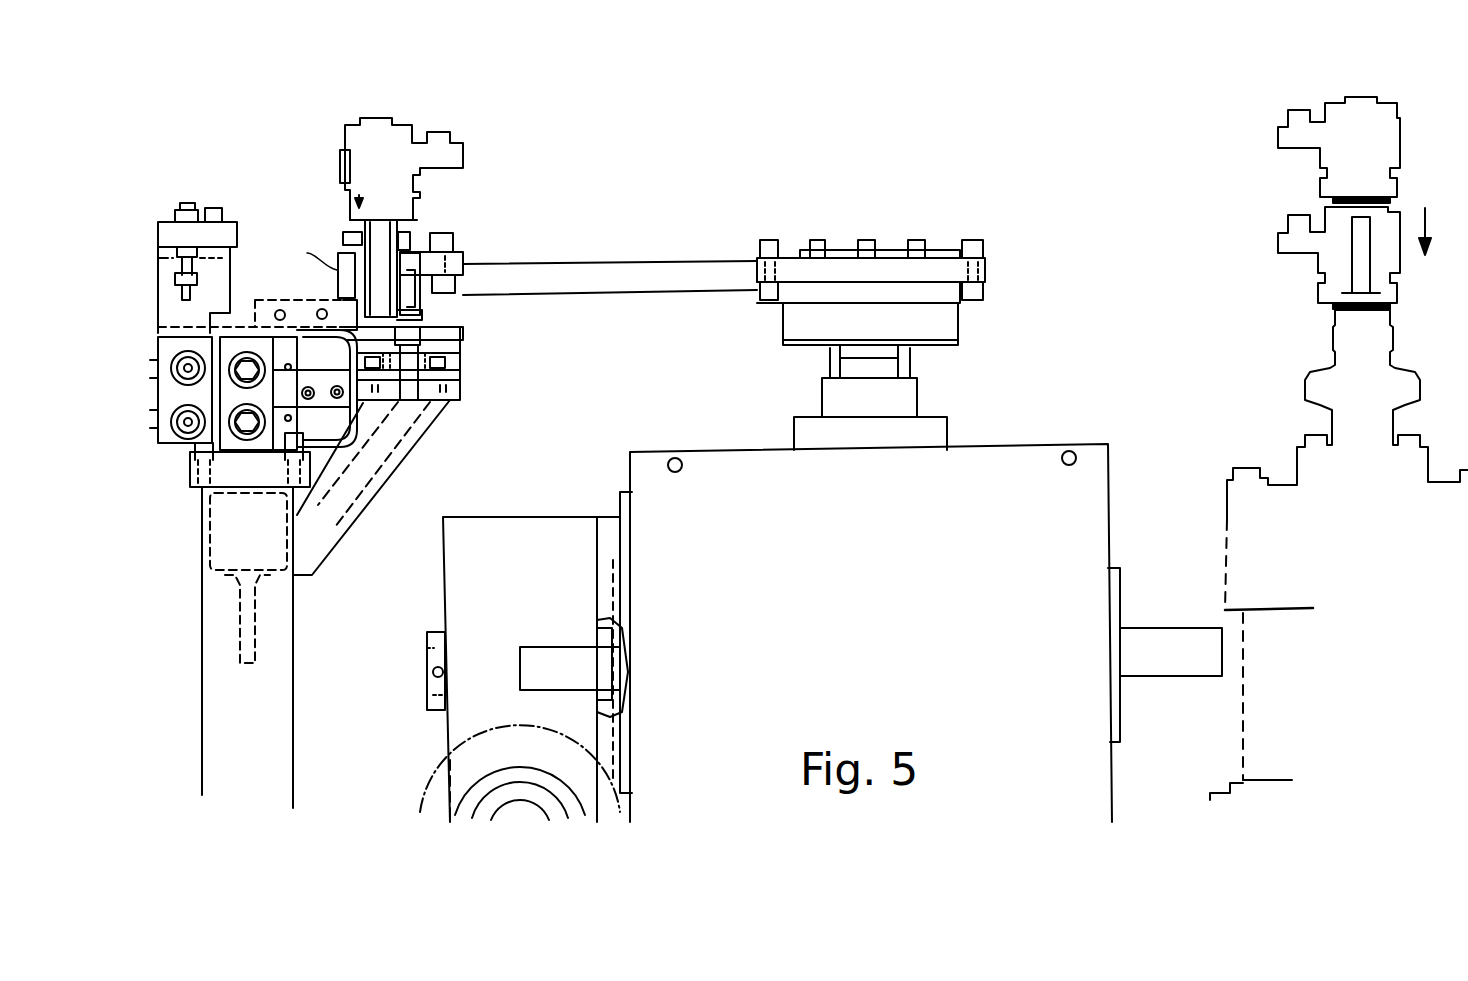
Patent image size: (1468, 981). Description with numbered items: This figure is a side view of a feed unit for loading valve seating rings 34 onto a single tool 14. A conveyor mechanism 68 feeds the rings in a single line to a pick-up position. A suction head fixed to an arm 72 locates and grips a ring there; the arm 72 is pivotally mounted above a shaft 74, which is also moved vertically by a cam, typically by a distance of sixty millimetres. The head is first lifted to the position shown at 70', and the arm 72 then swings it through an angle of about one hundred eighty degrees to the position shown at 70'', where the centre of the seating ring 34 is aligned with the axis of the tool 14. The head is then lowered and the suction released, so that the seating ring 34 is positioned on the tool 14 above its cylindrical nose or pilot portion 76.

The tool 14 is at (1300, 389).
The seating ring 34 is at (1388, 203).
The conveyor mechanism 68 is at (158, 333).
The suction head lifted position 70' is at (357, 228).
The suction head swung position 70'' is at (1284, 143).
The arm 72 is at (666, 262).
The shaft 74 is at (856, 375).
The pilot portion 76 is at (1352, 252).